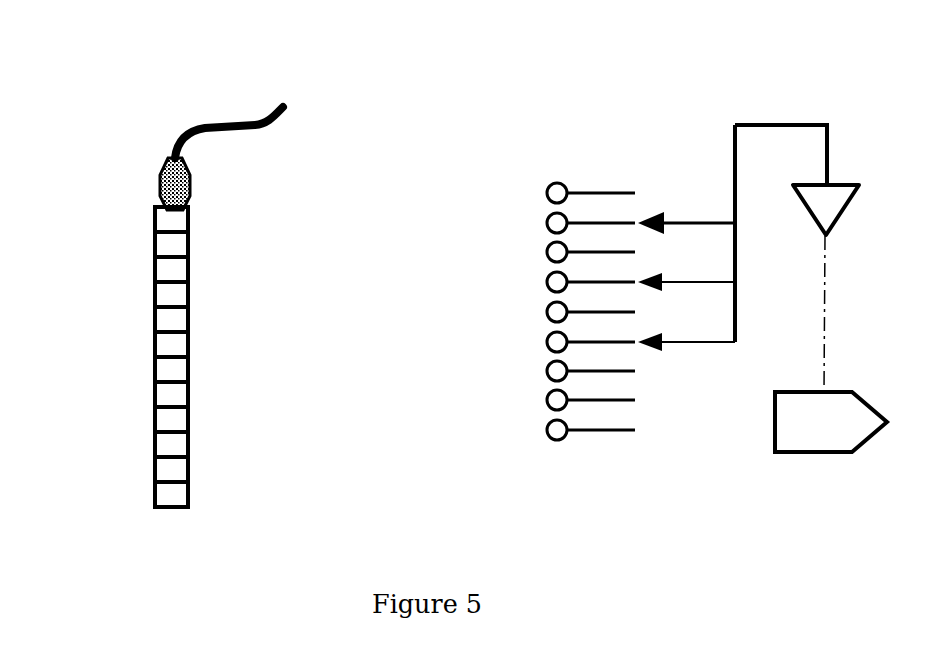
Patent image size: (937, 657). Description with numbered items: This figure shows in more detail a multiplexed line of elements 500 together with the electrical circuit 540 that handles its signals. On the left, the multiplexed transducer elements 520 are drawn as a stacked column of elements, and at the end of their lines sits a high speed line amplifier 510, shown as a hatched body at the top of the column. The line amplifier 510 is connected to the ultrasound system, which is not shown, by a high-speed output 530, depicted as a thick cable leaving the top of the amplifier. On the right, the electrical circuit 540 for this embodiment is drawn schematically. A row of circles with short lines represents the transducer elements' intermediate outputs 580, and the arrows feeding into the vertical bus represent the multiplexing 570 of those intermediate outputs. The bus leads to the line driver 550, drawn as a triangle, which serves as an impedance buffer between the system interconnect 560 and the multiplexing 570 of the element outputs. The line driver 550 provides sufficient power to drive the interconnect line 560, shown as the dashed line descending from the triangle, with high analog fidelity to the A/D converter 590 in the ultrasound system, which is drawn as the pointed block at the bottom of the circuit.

The multiplexed line of elements 500 is at (207, 46).
The high speed line amplifier 510 is at (150, 184).
The multiplexed transducer elements 520 is at (148, 300).
The high-speed output 530 is at (233, 118).
The electrical circuit 540 is at (755, 50).
The line driver 550 is at (816, 180).
The system interconnect 560 is at (848, 314).
The multiplexing 570 is at (686, 238).
The intermediate outputs 580 is at (585, 332).
The A/D converter 590 is at (831, 441).